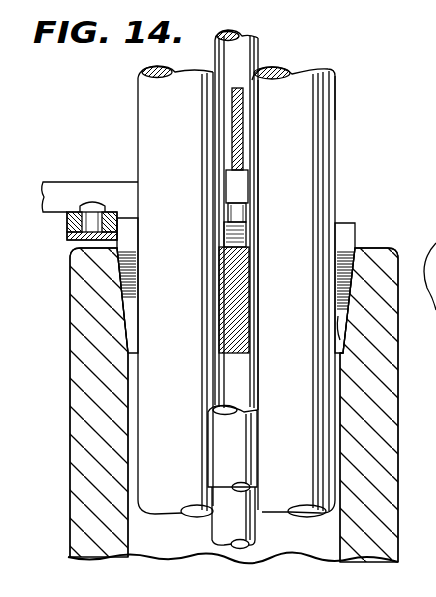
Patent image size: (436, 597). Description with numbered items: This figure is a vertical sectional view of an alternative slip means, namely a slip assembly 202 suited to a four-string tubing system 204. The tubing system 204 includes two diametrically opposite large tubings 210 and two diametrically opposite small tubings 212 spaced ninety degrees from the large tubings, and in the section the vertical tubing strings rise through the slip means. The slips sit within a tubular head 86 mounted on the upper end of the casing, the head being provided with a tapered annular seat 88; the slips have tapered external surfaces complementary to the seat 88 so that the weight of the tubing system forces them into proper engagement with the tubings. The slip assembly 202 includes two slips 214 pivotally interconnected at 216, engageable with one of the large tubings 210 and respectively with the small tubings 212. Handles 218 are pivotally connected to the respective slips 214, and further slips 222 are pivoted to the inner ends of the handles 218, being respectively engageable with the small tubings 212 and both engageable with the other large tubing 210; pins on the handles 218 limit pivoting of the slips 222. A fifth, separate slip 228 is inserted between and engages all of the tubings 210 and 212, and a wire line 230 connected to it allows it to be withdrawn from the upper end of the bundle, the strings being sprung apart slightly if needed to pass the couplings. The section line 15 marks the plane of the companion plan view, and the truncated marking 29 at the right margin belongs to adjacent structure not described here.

The section line 15- 15 is at (132, 143).
The tubular head 86 is at (372, 392).
The tapered annular seat 88 is at (343, 312).
The slip assembly 202 is at (62, 244).
The four-string tubing system 204 is at (341, 88).
The large tubings 210 is at (165, 98).
The small tubings 212 is at (248, 43).
The slips 214 is at (128, 302).
The pivotal interconnection 216 is at (93, 203).
The handles 218 is at (60, 204).
The slips 222 is at (347, 240).
The fifth separate slip 228 is at (233, 268).
The wire line 230 is at (237, 108).
The adjacent member 29 is at (424, 266).